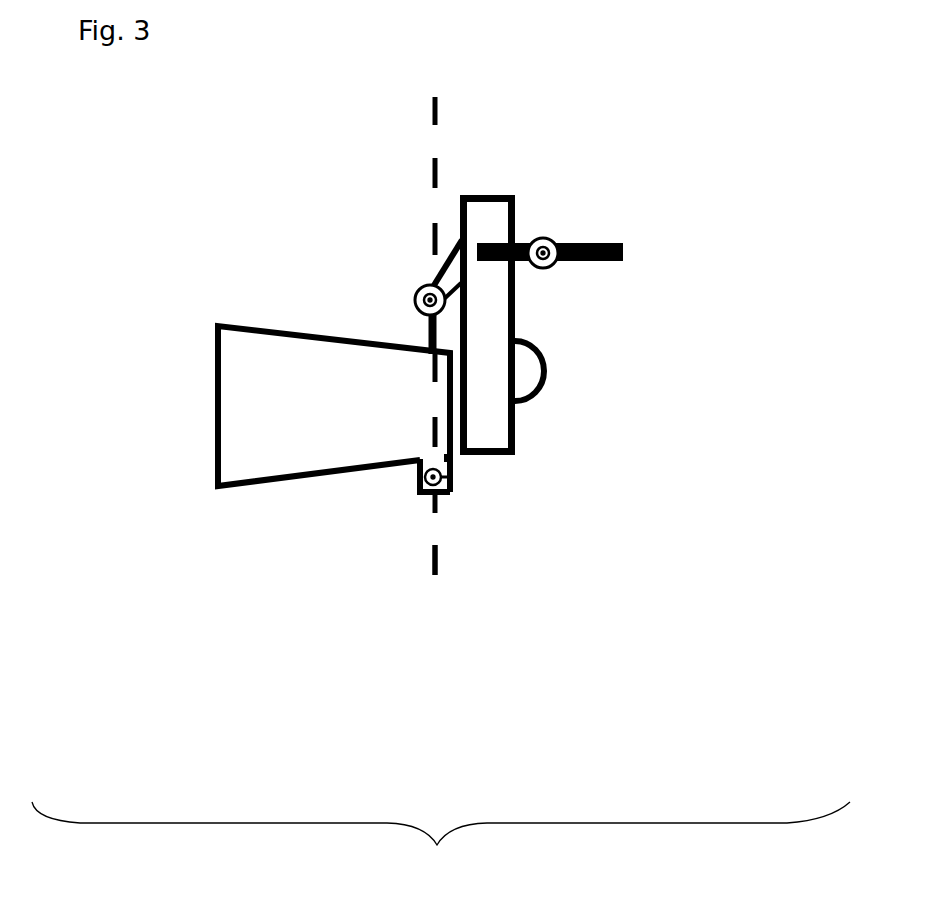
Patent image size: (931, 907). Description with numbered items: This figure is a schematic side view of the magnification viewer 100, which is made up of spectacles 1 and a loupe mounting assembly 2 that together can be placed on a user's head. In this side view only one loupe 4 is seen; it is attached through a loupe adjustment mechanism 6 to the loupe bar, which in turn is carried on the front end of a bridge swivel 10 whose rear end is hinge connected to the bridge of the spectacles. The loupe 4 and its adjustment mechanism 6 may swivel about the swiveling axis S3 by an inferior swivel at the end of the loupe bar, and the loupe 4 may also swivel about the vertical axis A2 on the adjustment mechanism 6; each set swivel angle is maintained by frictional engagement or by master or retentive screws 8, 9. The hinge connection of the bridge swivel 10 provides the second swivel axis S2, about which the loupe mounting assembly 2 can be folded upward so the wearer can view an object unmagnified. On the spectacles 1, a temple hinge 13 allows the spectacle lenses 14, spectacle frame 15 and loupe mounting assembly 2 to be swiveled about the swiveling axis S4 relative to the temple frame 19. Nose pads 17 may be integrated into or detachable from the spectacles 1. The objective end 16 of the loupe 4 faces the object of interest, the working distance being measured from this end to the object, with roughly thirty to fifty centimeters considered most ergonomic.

The spectacles 1 is at (566, 268).
The loupe mounting assembly 2 is at (425, 196).
The loupe 4 is at (217, 465).
The loupe adjustment mechanism 6 is at (452, 480).
The master or retentive screw 8 is at (480, 466).
The master or retentive screw 9 is at (478, 484).
The bridge swivel 10 is at (452, 273).
The temple hinge 13 is at (553, 267).
The spectacle lenses 14 is at (487, 195).
The spectacle frame 15 is at (516, 243).
The objective end 16 is at (205, 398).
The nose pads 17 is at (545, 385).
The temple frame 19 is at (623, 255).
The magnification viewer 100 is at (441, 837).
The swivel axis A2 is at (447, 576).
The second swivel axis S2 is at (423, 297).
The swiveling axis S3 is at (420, 487).
The swiveling axis S4 is at (548, 247).